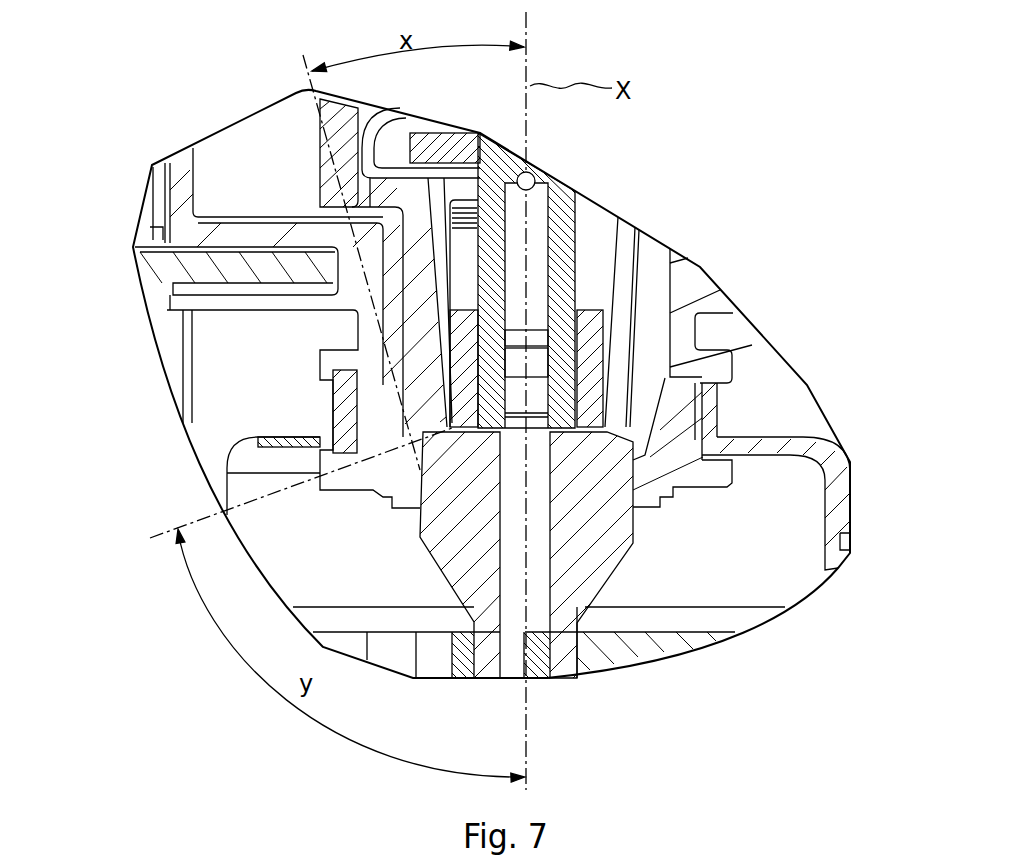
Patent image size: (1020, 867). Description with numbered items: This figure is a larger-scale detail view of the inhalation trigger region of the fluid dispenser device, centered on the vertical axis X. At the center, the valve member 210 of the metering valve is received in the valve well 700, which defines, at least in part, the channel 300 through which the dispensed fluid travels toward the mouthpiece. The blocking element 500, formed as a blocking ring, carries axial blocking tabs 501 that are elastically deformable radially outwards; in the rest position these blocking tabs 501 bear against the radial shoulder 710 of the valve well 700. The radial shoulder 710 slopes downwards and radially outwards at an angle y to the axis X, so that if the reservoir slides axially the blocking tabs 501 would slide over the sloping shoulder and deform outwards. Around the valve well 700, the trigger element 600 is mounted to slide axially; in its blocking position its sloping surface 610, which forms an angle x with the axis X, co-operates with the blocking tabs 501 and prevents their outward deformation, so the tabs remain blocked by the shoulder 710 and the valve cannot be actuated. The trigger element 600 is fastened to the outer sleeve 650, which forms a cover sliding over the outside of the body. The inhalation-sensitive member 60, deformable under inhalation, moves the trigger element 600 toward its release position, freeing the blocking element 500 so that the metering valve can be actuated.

The blocking element 500 is at (350, 153).
The outer sleeve 650 is at (177, 268).
The axial blocking tabs 501 is at (417, 318).
The trigger element 600 is at (368, 402).
The valve member 210 is at (533, 277).
The surface 610 is at (640, 416).
The inhalation-sensitive member 60 is at (800, 497).
The valve well 700 is at (587, 523).
The channel 300 is at (530, 570).
The radial shoulder 710 is at (420, 532).